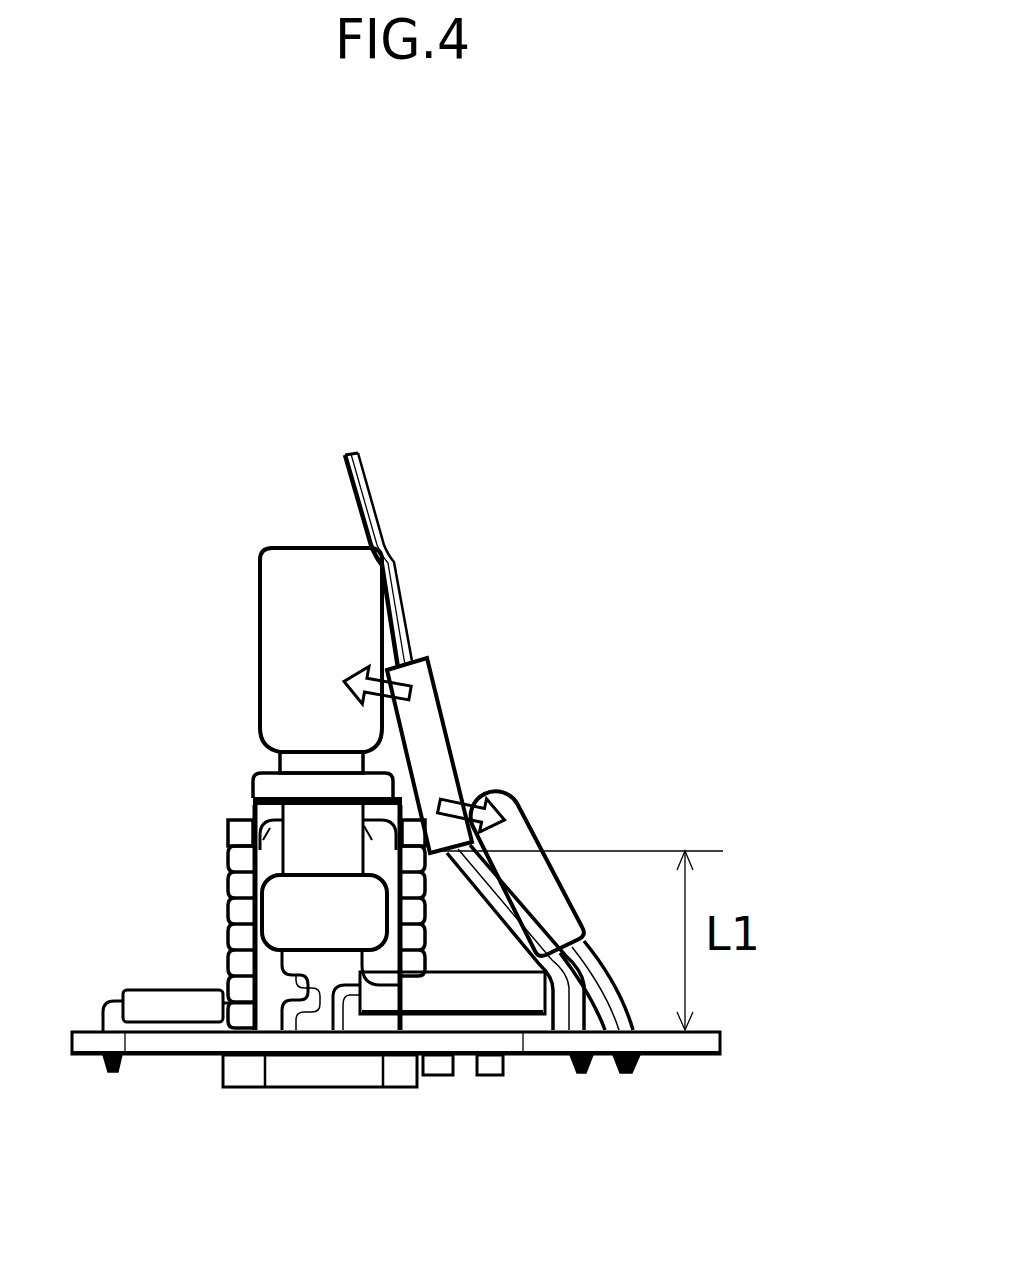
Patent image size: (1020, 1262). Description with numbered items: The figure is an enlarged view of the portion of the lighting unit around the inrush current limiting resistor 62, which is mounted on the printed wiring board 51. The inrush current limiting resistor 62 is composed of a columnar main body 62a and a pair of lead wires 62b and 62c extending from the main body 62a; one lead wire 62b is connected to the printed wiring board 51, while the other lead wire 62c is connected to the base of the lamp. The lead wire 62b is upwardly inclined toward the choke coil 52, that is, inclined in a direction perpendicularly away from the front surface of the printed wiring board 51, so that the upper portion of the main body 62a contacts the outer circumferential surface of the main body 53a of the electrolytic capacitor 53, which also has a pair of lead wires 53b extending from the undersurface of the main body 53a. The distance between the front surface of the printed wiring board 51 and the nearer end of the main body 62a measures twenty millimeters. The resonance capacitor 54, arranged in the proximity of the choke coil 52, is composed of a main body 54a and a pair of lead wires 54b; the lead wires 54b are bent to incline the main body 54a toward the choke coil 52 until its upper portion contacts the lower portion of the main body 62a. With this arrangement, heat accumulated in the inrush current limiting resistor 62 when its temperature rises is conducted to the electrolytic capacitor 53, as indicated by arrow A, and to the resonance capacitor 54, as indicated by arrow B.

The printed wiring board 51 is at (720, 1040).
The choke coil 52 is at (224, 903).
The electrolytic capacitor 53 is at (206, 652).
The main body 53a is at (277, 655).
The lead wires 53b is at (378, 840).
The resonance capacitor 54 is at (633, 946).
The main body 54a is at (528, 868).
The lead wires 54b is at (667, 1055).
The inrush current limiting resistor 62 is at (496, 817).
The main body 62a is at (440, 745).
The lead wire 62b is at (491, 925).
The lead wire 62c is at (393, 555).